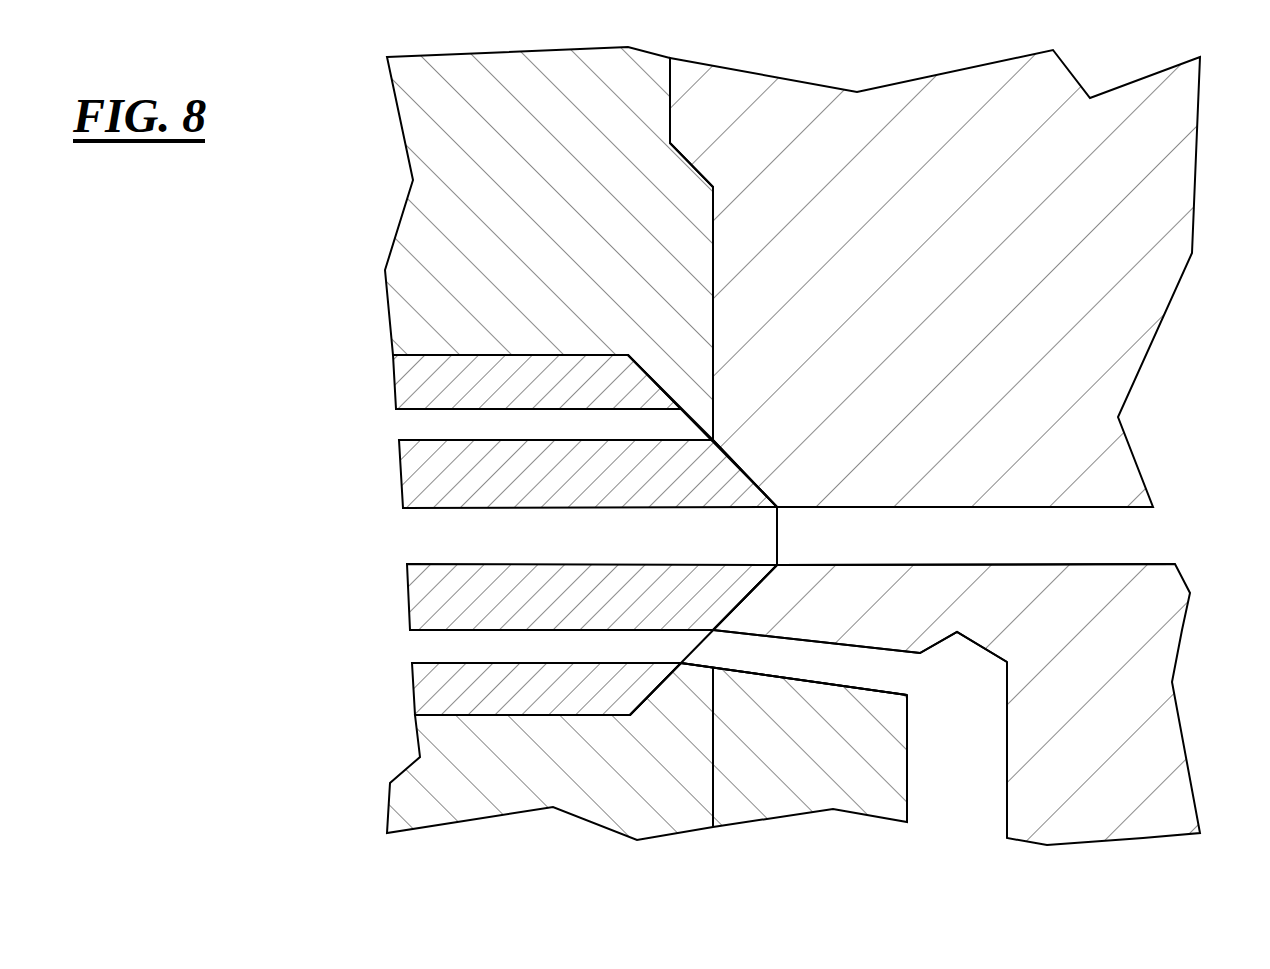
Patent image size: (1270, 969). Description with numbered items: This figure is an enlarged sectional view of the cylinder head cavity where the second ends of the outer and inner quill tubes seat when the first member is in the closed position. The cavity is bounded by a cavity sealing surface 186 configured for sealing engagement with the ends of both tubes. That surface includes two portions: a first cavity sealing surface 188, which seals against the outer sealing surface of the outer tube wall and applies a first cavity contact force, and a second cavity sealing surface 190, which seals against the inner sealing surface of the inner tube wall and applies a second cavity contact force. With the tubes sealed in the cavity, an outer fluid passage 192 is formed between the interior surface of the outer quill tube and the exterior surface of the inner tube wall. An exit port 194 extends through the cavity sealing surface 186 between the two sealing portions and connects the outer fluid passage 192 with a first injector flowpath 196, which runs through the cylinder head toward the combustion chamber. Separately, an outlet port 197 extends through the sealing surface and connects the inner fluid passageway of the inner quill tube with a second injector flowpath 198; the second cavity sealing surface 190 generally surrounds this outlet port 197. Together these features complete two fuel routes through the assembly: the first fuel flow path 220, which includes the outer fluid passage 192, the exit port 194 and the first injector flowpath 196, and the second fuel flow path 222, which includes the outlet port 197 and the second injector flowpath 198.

The cavity sealing surface 186 is at (660, 372).
The first cavity sealing surface 188 is at (647, 373).
The second cavity sealing surface 190 is at (600, 647).
The outer fluid passage 192 is at (503, 428).
The exit port 194 is at (713, 430).
The first injector flowpath 196 is at (817, 670).
The outlet port 197 is at (778, 533).
The second injector flowpath 198 is at (1023, 533).
The first fuel flow path 220 is at (960, 697).
The second fuel flow path 222 is at (1120, 530).